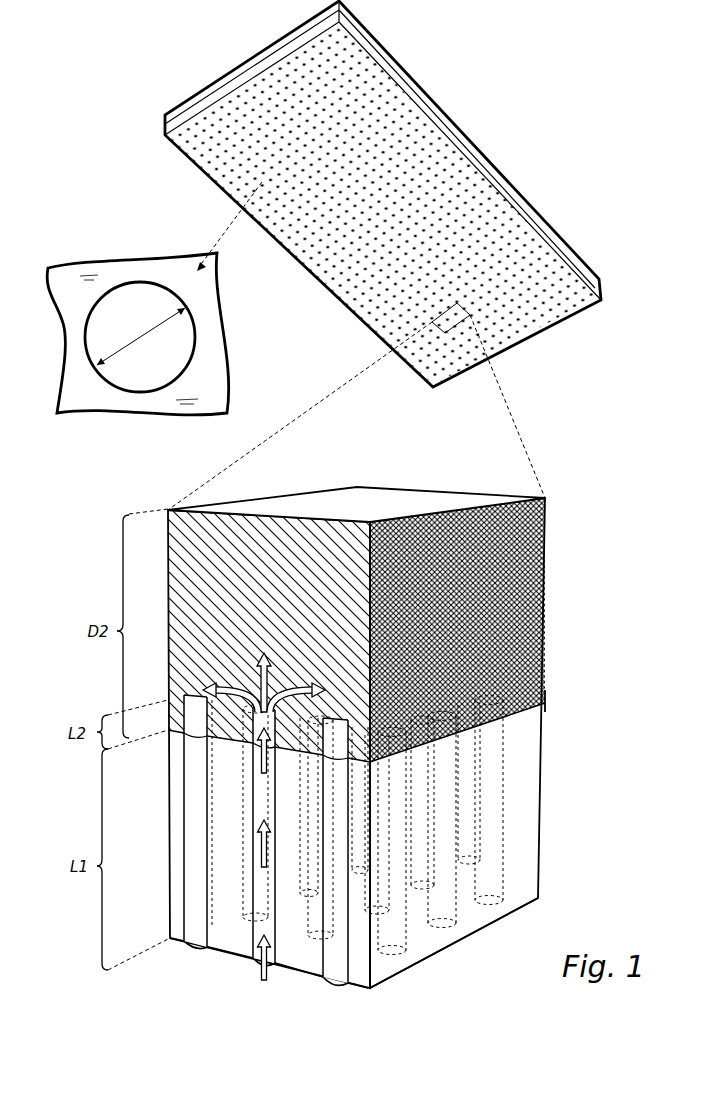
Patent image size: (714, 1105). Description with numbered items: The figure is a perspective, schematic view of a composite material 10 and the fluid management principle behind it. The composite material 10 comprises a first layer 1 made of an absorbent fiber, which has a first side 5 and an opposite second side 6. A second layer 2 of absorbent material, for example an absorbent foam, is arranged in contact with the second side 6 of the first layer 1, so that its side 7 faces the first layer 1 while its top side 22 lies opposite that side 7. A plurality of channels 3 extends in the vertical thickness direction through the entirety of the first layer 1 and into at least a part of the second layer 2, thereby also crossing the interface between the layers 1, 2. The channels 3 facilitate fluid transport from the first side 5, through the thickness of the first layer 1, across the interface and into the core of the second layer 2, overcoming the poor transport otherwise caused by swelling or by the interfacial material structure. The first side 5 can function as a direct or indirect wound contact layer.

The first layer 1 is at (420, 100).
The second layer 2 is at (390, 58).
The channels 3 is at (132, 282).
The first side 5 is at (503, 324).
The second side 6 is at (545, 700).
The side facing the second side 7 is at (512, 716).
The composite material 10 is at (582, 113).
The top side 22 is at (468, 497).